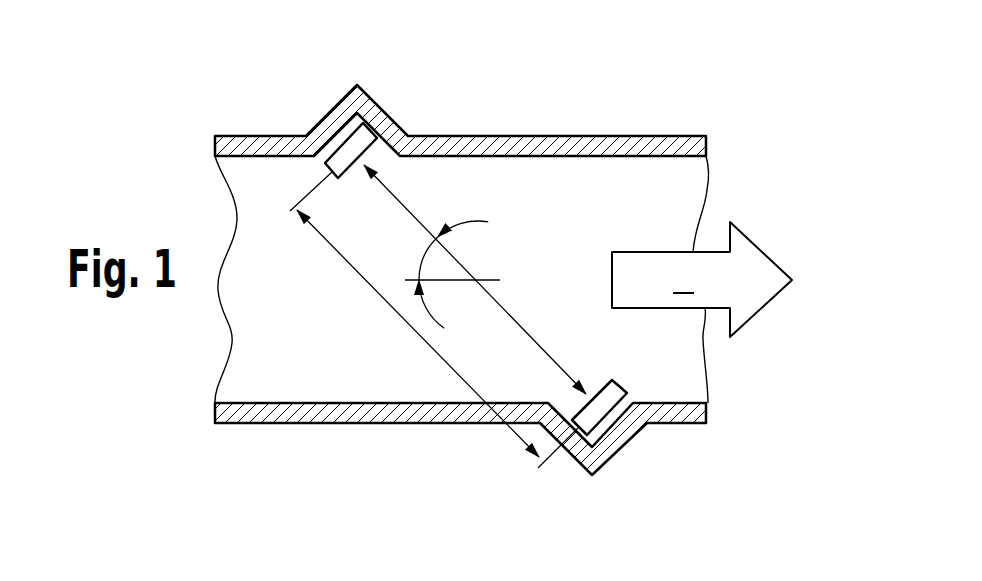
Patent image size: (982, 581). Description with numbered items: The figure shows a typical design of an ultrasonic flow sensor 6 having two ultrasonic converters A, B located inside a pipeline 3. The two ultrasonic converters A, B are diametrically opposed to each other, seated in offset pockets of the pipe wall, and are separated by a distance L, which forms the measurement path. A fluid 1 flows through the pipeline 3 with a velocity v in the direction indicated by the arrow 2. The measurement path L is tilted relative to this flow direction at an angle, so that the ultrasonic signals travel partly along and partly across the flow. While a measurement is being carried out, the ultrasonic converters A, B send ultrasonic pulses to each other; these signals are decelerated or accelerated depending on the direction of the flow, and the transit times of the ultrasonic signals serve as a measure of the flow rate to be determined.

The fluid 1 is at (547, 192).
The arrow 2 is at (752, 270).
The pipeline 3 is at (607, 147).
The ultrasonic flow sensor 6 is at (500, 78).
The ultrasonic converter A is at (385, 118).
The ultrasonic converter B is at (613, 393).
The measurement path L is at (403, 323).
The velocity v is at (684, 276).